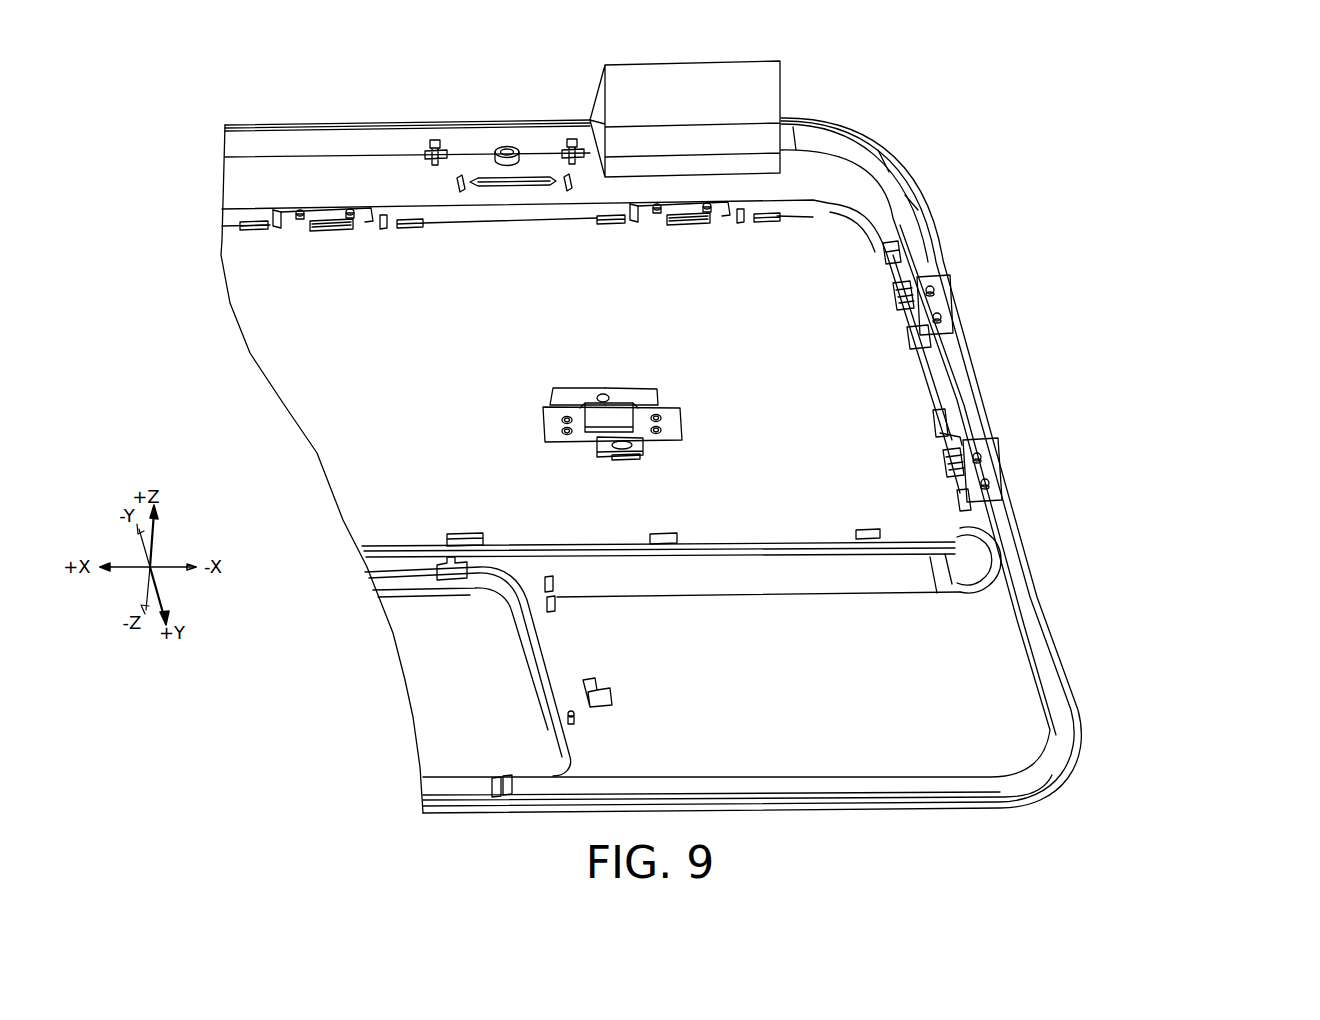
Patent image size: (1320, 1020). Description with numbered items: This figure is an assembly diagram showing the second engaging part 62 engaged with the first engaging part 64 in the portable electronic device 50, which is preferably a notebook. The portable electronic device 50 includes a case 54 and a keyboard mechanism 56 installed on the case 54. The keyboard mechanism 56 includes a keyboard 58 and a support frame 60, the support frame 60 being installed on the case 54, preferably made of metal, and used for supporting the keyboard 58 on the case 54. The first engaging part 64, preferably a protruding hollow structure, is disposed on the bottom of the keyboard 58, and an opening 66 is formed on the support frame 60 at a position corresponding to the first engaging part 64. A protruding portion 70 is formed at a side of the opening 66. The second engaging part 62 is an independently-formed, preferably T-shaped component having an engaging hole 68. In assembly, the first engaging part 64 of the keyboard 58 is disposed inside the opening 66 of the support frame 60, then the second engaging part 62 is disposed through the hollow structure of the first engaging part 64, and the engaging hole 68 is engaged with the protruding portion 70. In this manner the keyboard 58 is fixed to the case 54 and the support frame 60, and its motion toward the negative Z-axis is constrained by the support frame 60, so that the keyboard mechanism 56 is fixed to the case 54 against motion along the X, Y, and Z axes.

The portable electronic device 50 is at (762, 454).
The case 54 is at (997, 644).
The keyboard mechanism 56 is at (856, 468).
The keyboard 58 is at (830, 468).
The support frame 60 is at (898, 373).
The second engaging part 62 is at (645, 396).
The first engaging part 64 is at (597, 400).
The opening 66 is at (677, 422).
The engaging hole 68 is at (640, 447).
The protruding portion 70 is at (620, 457).